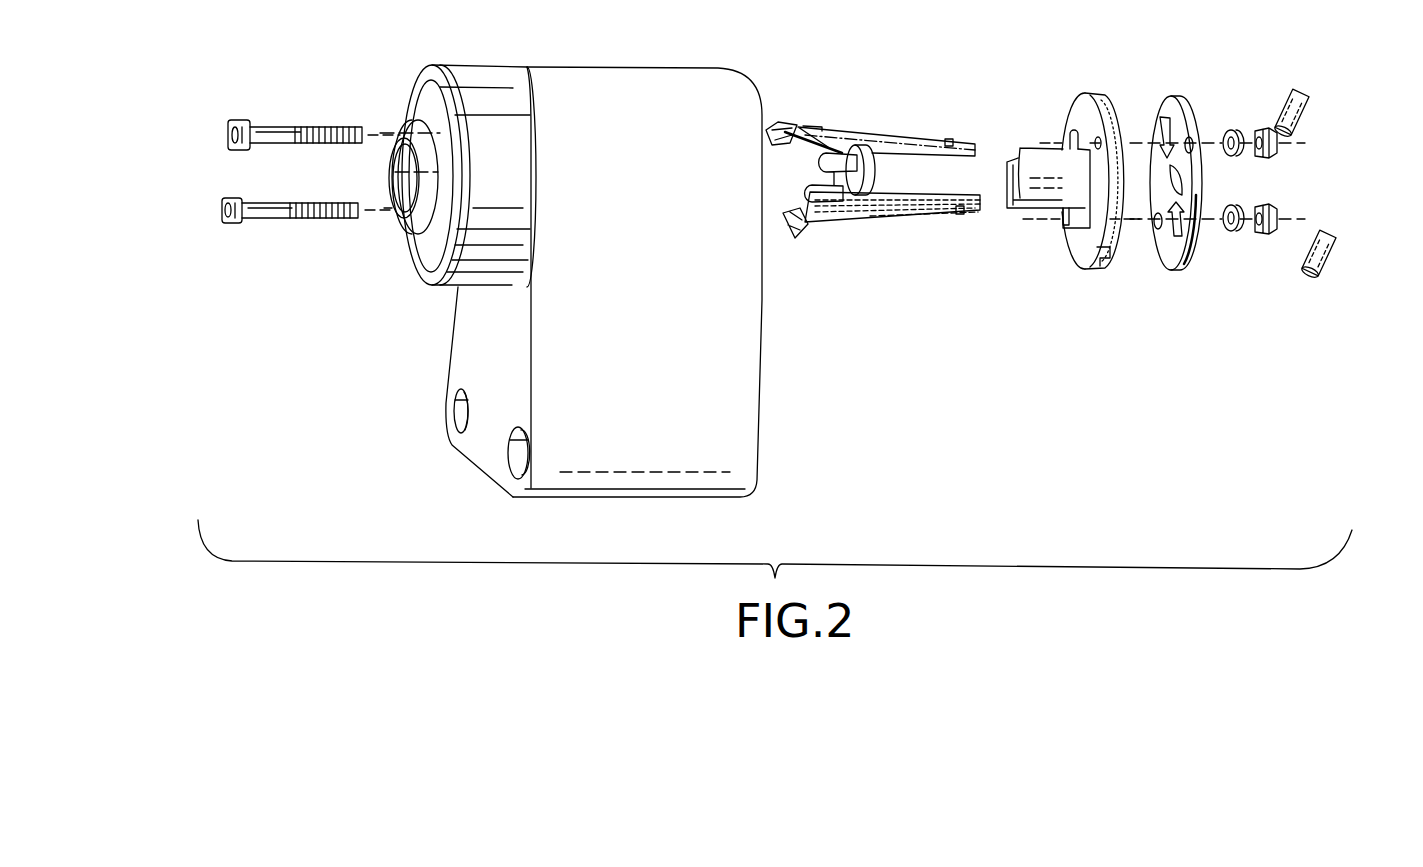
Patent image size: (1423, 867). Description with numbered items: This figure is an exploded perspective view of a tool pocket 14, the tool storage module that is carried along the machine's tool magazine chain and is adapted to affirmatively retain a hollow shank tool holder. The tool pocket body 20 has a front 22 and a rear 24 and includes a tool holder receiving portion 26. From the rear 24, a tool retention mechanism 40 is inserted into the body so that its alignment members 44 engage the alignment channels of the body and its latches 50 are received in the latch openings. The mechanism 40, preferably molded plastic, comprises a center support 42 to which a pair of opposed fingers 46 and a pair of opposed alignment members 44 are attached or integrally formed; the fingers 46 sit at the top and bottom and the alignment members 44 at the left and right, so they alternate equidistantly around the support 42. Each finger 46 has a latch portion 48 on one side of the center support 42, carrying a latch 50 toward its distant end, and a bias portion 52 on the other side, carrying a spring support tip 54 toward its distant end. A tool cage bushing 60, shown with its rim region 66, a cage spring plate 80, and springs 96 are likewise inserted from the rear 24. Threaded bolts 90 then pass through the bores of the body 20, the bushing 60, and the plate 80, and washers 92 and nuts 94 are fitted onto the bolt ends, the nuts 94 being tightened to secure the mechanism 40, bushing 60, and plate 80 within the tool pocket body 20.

The tool pocket 14 is at (1076, 414).
The tool pocket body 20 is at (581, 244).
The front 22 is at (430, 97).
The rear 24 is at (760, 347).
The tool holder receiving portion 26 is at (410, 177).
The tool retention mechanism 40 is at (881, 171).
The center support 42 is at (858, 147).
The alignment members 44 is at (818, 190).
The fingers 46 is at (810, 125).
The latch portion 48 is at (835, 205).
The latch 50 is at (780, 122).
The bias portion 52 is at (922, 212).
The spring support tip 54 is at (952, 140).
The tool cage bushing 60 is at (1077, 143).
The end cap rim 66 is at (1112, 110).
The cage spring plate 80 is at (1188, 96).
The threaded bolts 90 is at (222, 198).
The washers 92 is at (1230, 232).
The nuts 94 is at (1273, 232).
The springs 96 is at (1302, 120).